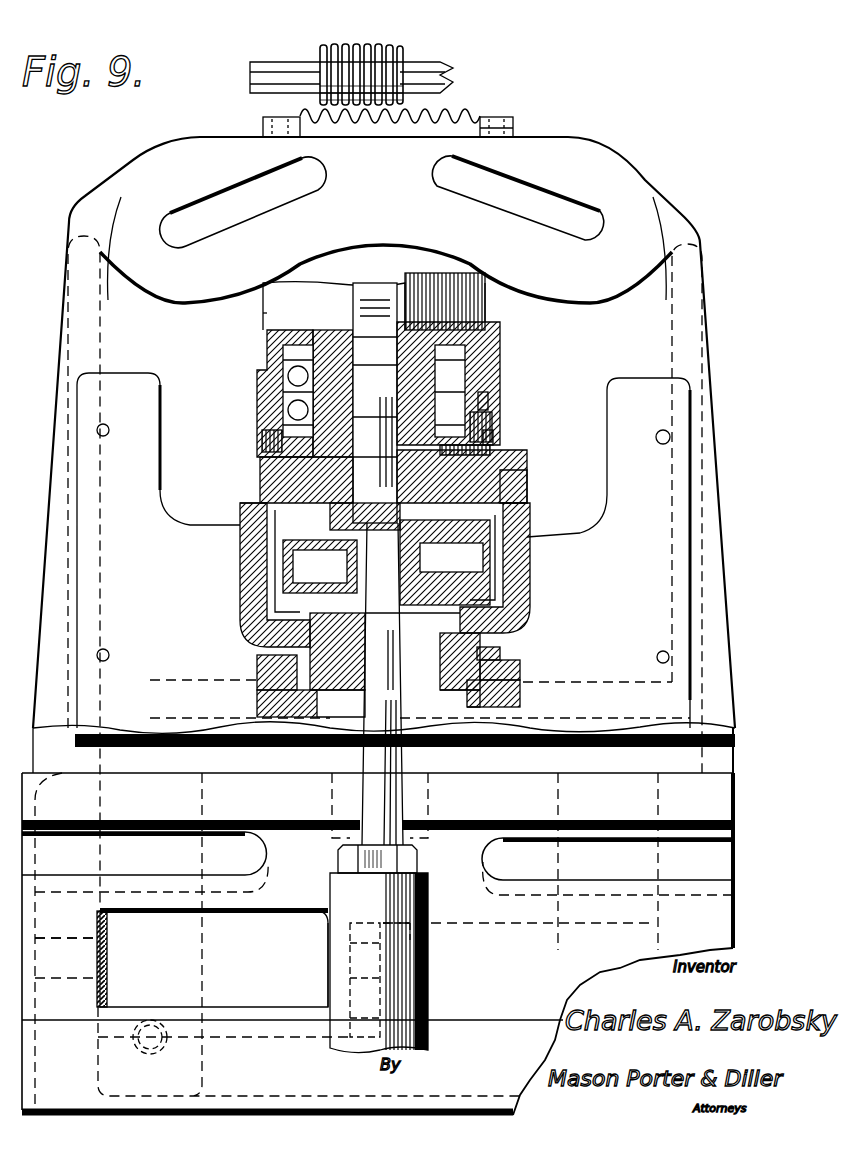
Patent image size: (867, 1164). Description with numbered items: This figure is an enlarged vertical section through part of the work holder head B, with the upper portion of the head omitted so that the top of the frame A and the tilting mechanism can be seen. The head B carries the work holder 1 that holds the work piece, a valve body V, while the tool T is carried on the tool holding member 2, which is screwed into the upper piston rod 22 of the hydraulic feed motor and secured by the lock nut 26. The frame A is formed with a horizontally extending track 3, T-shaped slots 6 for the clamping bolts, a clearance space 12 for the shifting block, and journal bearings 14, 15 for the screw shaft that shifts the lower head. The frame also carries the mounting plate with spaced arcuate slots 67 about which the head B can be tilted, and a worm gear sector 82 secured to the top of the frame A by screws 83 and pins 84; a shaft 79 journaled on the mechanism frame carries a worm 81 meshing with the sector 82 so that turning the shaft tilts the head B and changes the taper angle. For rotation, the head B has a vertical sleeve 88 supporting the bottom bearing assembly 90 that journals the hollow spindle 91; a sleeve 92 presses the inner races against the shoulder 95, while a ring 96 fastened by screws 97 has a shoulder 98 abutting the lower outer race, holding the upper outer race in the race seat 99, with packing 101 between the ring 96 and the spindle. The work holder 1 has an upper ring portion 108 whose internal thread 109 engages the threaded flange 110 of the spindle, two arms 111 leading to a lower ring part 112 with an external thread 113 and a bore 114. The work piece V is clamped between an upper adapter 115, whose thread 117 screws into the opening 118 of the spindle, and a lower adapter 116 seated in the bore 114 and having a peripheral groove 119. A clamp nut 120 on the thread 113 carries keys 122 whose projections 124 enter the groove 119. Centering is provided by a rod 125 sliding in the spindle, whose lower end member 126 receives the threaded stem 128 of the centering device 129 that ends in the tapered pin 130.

The work holder 1 is at (530, 506).
The tool holding member 2 is at (383, 793).
The horizontally extending track 3 is at (492, 1022).
The T-shaped slots 6 is at (84, 830).
The clearance space 12 is at (173, 913).
The journal bearing 14 is at (63, 940).
The journal bearing 15 is at (363, 940).
The upper piston rod 22 is at (342, 923).
The lock nut 26 is at (418, 856).
The arcuate slots 67 is at (280, 195).
The shaft 79 is at (268, 75).
The worm 81 is at (322, 60).
The worm gear sector 82 is at (440, 118).
The screws 83 is at (516, 119).
The pins 84 is at (490, 122).
The vertical sleeve 88 is at (292, 283).
The bottom bearing assembly 90 is at (262, 388).
The hollow spindle 91 is at (263, 313).
The sleeve 92 is at (488, 330).
The shoulder 95 is at (262, 470).
The ring 96 is at (500, 420).
The screws 97 is at (265, 450).
The shoulder 98 is at (485, 403).
The race seat 99 is at (268, 345).
The packing 101 is at (490, 452).
The upper ring portion 108 is at (268, 507).
The internal thread 109 is at (507, 486).
The threaded flange 110 is at (260, 532).
The ribs or arms 111 is at (250, 583).
The lower ring part 112 is at (297, 628).
The external thread 113 is at (500, 652).
The bore 114 is at (513, 628).
The upper adapter part 115 is at (272, 525).
The lower adapter part 116 is at (527, 607).
The thread 117 is at (420, 511).
The opening 118 is at (488, 465).
The peripheral groove 119 is at (323, 713).
The clamp nut 120 is at (520, 673).
The keys 122 is at (283, 703).
The projections 124 is at (467, 690).
The locator or centering rod 125 is at (342, 332).
The lower end member 126 is at (378, 330).
The threaded stem 128 is at (385, 345).
The work piece locating or centering device 129 is at (360, 413).
The tapered pin 130 is at (320, 566).
The frame A is at (722, 783).
The head B is at (485, 300).
The tool T is at (280, 655).
The valve body V is at (483, 553).